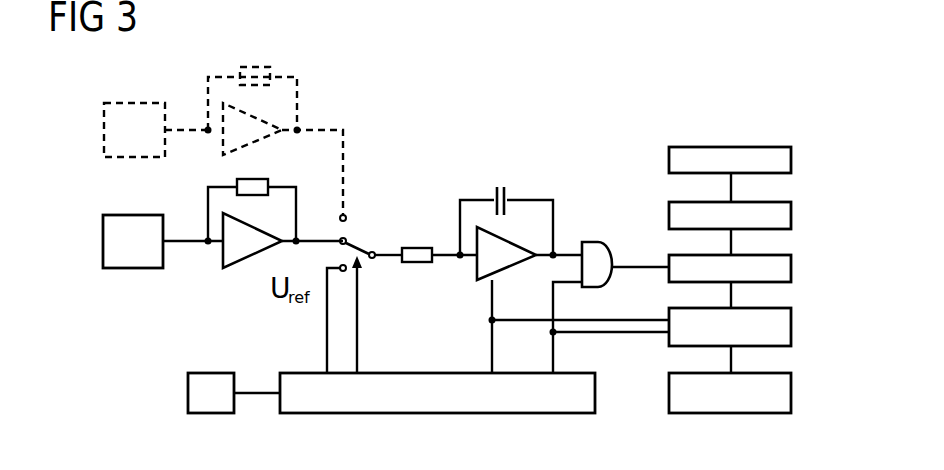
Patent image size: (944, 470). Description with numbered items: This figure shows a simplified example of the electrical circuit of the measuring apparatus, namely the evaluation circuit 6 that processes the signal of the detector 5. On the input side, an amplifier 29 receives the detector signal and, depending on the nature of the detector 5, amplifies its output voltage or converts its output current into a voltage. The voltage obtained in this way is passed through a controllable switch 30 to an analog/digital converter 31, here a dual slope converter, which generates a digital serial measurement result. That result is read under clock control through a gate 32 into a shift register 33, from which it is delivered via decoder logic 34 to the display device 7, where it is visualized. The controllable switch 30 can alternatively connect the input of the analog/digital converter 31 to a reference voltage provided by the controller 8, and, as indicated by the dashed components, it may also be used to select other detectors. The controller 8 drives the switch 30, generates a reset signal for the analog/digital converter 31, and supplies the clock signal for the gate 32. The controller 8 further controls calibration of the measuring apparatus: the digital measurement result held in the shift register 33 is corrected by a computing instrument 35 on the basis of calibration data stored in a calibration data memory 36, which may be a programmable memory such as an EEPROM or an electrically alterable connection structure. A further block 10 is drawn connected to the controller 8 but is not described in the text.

The sensor / signal source 5 is at (103, 240).
The first amplifier 29 is at (190, 219).
The switch 30 is at (366, 248).
The second amplifier (integrator) 31 is at (445, 214).
The AND gate 32 is at (600, 245).
The evaluation circuit 6 is at (585, 142).
The first unit 7 is at (781, 160).
The second unit 34 is at (781, 215).
The third unit 33 is at (781, 270).
The fourth unit 35 is at (781, 331).
The fifth unit 36 is at (781, 401).
The control unit / bus 8 is at (420, 373).
The clock / timer unit 10 is at (200, 373).